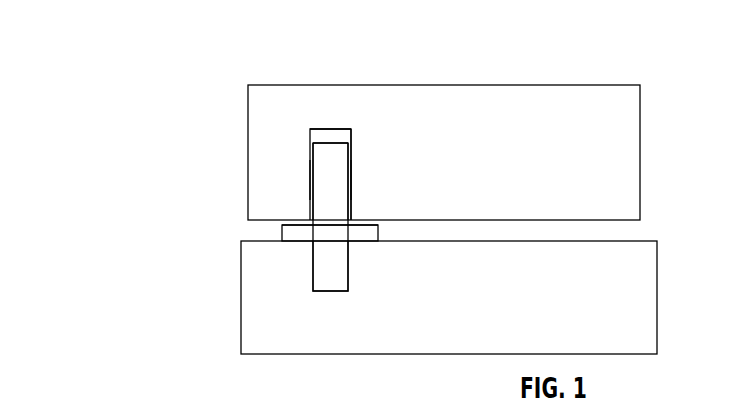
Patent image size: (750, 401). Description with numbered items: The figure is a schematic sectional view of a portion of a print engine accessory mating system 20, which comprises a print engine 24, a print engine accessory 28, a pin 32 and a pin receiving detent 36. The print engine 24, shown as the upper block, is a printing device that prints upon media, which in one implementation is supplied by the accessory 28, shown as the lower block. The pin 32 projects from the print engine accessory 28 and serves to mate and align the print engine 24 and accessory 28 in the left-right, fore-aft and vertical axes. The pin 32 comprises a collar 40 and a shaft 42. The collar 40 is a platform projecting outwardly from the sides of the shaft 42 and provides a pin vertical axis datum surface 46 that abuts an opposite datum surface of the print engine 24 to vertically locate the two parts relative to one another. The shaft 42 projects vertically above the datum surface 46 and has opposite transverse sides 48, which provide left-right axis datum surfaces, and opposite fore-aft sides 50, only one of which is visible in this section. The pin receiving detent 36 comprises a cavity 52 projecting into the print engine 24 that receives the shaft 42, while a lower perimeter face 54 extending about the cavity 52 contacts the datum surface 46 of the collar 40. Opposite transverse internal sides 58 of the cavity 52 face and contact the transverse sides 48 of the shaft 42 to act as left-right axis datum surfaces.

The print engine accessory mating system 20 is at (257, 57).
The print engine 24 is at (642, 158).
The print engine accessory 28 is at (658, 305).
The pin 32 is at (352, 152).
The pin receiving detent 36 is at (308, 127).
The collar 40 is at (380, 233).
The shaft 42 is at (330, 185).
The pin vertical axis datum surface 46 is at (367, 219).
The transverse sides 48 is at (315, 185).
The fore-aft sides 50 is at (310, 153).
The cavity 52 is at (352, 130).
The perimeter face 54 is at (295, 219).
The transverse internal sides 58 is at (309, 176).